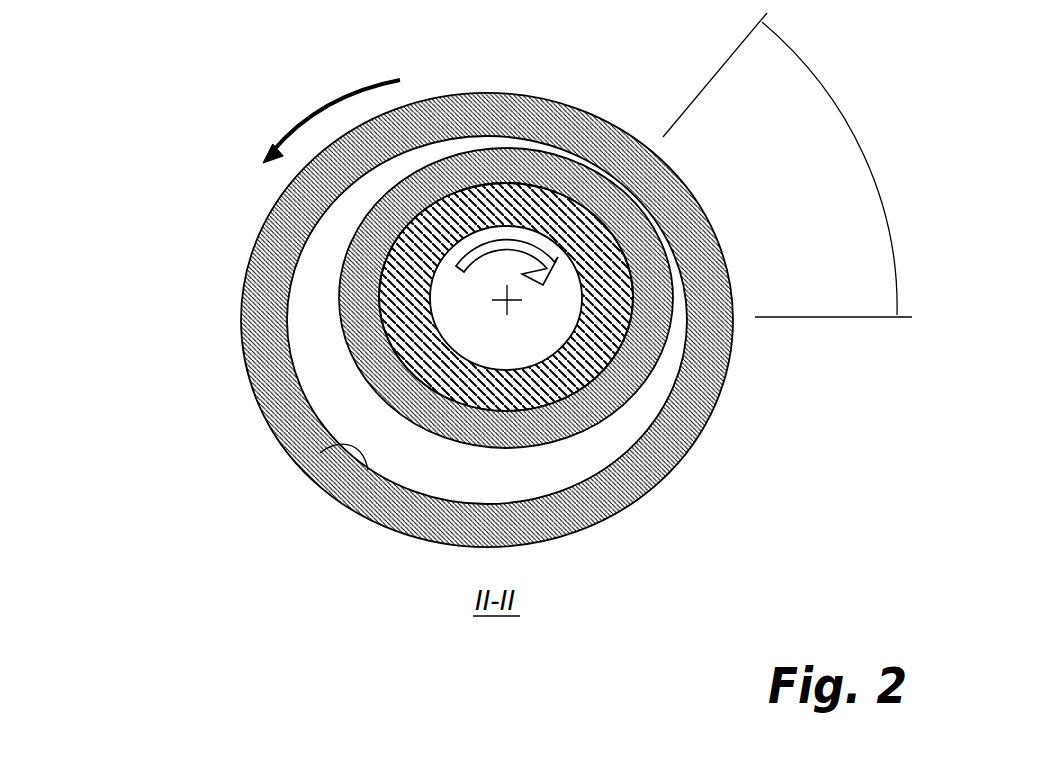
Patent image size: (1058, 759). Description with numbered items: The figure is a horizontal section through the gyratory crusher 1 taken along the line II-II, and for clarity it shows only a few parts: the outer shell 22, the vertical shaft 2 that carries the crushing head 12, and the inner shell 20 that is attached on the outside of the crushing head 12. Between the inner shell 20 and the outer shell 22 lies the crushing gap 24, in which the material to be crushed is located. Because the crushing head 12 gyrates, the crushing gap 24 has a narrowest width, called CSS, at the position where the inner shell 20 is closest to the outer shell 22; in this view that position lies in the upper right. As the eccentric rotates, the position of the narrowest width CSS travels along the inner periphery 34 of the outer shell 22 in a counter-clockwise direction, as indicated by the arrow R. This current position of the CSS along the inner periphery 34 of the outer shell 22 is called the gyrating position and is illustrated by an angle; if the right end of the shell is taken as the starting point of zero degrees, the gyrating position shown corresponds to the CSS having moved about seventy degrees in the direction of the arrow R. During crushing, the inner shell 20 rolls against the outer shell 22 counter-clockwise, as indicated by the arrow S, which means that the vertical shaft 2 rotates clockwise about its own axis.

The gyratory crusher 1 is at (441, 324).
The vertical shaft 2 is at (498, 335).
The crushing head 12 is at (575, 372).
The inner shell 20 is at (640, 340).
The outer shell 22 is at (272, 273).
The crushing gap 24 is at (322, 357).
The inner periphery 34 is at (332, 445).
The arrow R is at (340, 98).
The arrow S is at (508, 242).
The narrowest width CSS is at (622, 182).